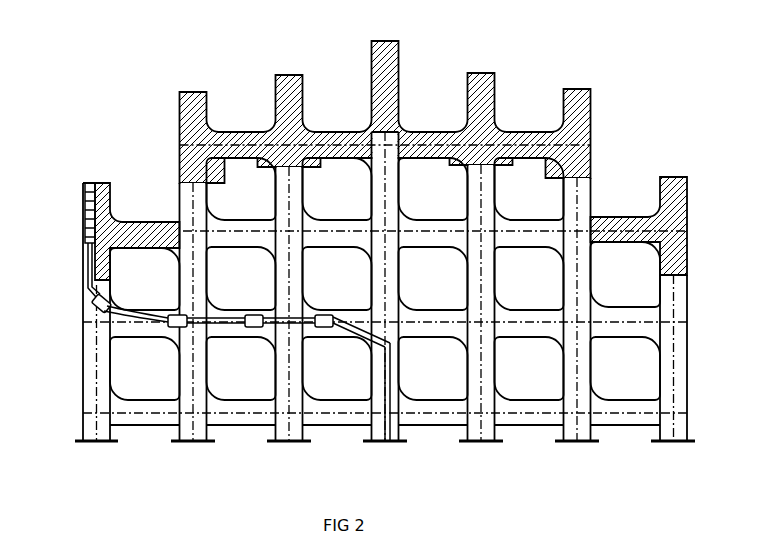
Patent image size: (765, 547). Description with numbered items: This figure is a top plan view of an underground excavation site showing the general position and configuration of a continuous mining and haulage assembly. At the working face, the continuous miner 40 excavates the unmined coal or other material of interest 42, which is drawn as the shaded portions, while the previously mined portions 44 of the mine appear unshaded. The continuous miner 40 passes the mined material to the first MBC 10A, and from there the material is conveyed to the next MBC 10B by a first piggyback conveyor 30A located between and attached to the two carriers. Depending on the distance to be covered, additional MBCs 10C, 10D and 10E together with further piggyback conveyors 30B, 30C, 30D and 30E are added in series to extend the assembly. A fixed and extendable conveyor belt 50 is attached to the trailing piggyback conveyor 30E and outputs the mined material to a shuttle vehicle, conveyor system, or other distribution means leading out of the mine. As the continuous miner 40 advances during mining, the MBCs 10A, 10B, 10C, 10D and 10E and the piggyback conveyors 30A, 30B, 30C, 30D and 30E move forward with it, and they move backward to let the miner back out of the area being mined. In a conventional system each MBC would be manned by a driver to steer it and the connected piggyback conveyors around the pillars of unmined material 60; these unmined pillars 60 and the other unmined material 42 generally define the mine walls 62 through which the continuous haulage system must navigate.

The first MBC 10A is at (87, 236).
The MBC 10B is at (96, 311).
The MBC 10C is at (172, 328).
The MBC 10D is at (253, 328).
The MBC 10E is at (325, 315).
The first piggyback conveyor 30A is at (90, 292).
The piggyback conveyor 30B is at (132, 313).
The piggyback conveyor 30C is at (228, 320).
The piggyback conveyor 30D is at (310, 326).
The trailing piggyback conveyor 30E is at (367, 333).
The continuous miner 40 is at (85, 186).
The unmined coal or other materials 42 is at (112, 207).
The previously mined portions 44 is at (587, 196).
The fixed and extendable conveyor belt 50 is at (391, 378).
The pillars of unmined material 60 is at (251, 198).
The mine walls 62 is at (606, 418).